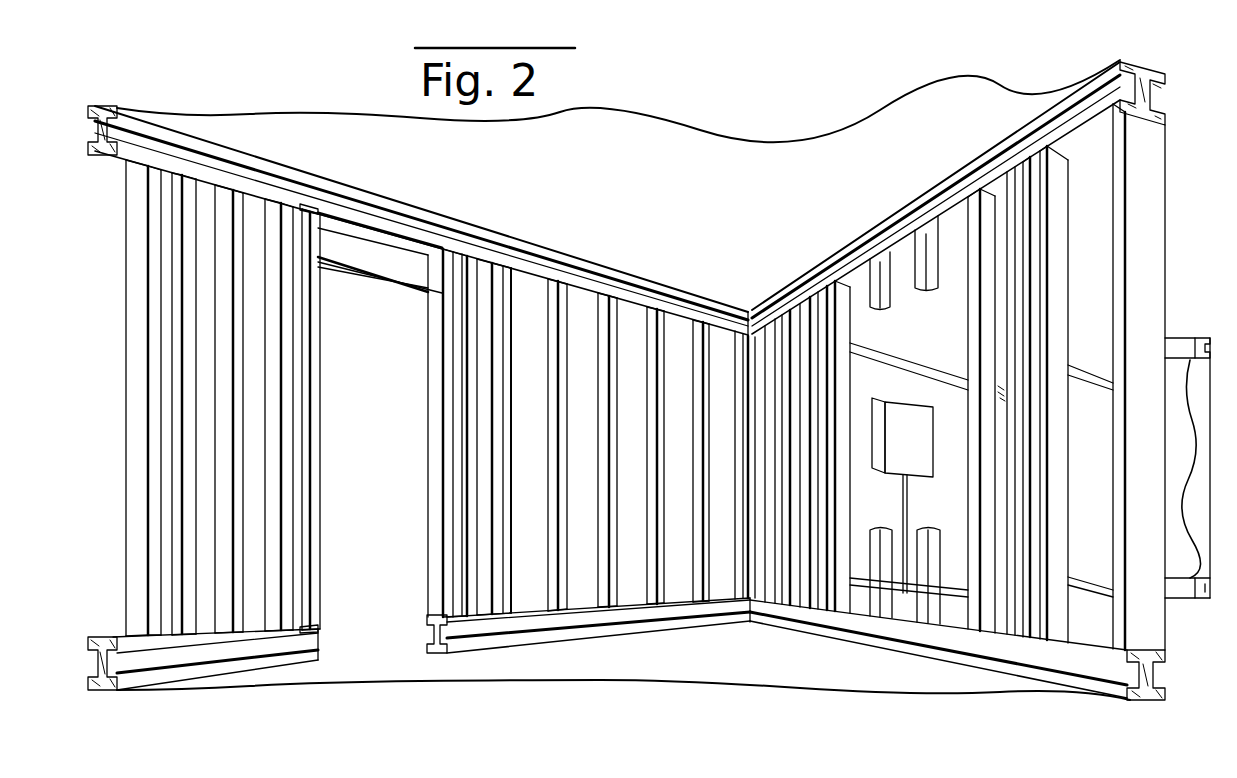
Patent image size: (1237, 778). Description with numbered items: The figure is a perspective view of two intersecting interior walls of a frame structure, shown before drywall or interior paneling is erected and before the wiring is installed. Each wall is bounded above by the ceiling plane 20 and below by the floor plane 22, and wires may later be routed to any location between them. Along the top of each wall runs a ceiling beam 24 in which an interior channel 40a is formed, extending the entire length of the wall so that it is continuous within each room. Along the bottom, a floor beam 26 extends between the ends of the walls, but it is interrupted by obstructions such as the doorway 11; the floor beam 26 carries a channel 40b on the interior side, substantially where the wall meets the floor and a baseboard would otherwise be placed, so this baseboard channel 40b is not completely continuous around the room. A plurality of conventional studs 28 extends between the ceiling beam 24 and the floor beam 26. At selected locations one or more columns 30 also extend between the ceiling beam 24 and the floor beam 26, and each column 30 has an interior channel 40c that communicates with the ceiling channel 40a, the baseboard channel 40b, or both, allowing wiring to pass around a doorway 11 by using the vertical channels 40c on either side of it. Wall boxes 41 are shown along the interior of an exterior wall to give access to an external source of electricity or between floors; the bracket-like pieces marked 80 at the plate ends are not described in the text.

The doorway 11 is at (377, 496).
The ceiling plane 20 is at (702, 206).
The floor plane 22 is at (805, 666).
The ceiling beam 24 is at (844, 242).
The floor beam 26 is at (918, 633).
The conventional stud 28 is at (1153, 178).
The column 30 is at (1078, 302).
The interior channel of ceiling beam 40a is at (465, 236).
The floor beam channel 40b is at (621, 614).
The column interior channel 40c is at (306, 375).
The wall box 41 is at (897, 412).
The plate end clip 80 is at (306, 207).